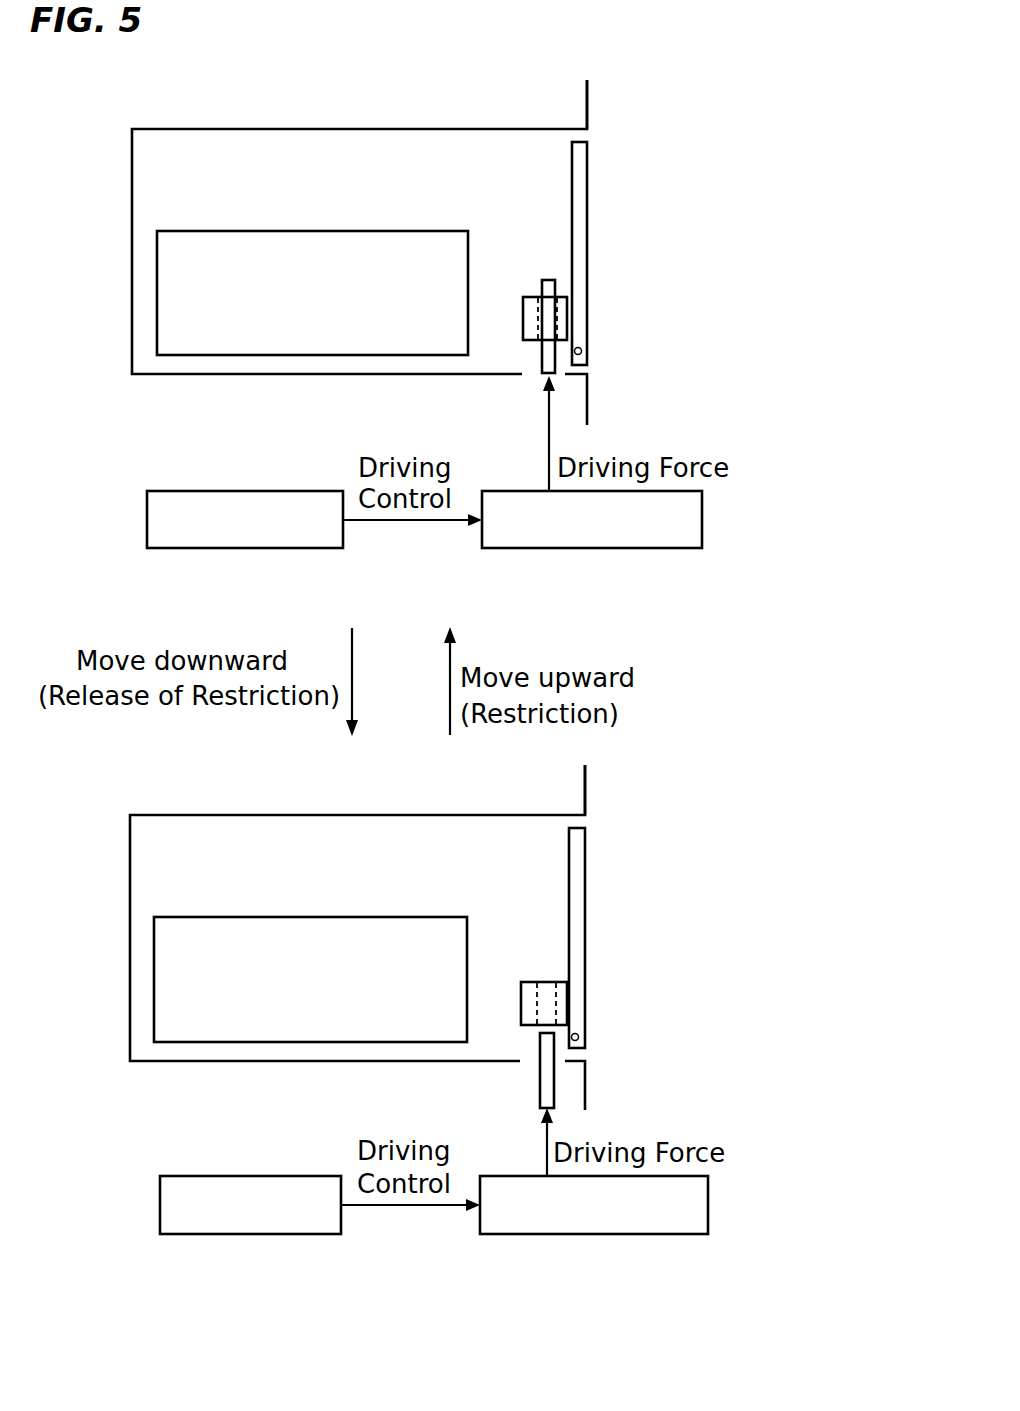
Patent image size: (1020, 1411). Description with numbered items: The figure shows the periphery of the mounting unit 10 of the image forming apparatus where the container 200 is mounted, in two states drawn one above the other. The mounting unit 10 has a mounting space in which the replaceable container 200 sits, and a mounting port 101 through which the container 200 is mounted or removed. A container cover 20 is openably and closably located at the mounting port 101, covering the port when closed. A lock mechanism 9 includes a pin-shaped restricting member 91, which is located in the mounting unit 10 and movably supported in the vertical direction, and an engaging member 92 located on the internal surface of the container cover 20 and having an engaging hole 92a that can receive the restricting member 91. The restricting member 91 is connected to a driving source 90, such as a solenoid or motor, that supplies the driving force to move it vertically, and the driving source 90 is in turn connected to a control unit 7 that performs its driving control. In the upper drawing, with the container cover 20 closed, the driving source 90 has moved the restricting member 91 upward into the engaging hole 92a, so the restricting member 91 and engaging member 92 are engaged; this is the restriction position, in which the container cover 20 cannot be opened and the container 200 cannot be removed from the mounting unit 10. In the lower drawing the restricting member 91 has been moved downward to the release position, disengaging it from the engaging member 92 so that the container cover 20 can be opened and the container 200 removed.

The mounting unit 10 is at (272, 149).
The container 200 is at (206, 237).
The mounting port 101 is at (580, 133).
The container cover 20 is at (580, 226).
The restricting member 91 is at (549, 280).
The engaging member 92 is at (523, 318).
The engaging hole 92a is at (540, 297).
The lock mechanism 9 is at (493, 400).
The control unit 7 is at (275, 549).
The driving source 90 is at (547, 549).